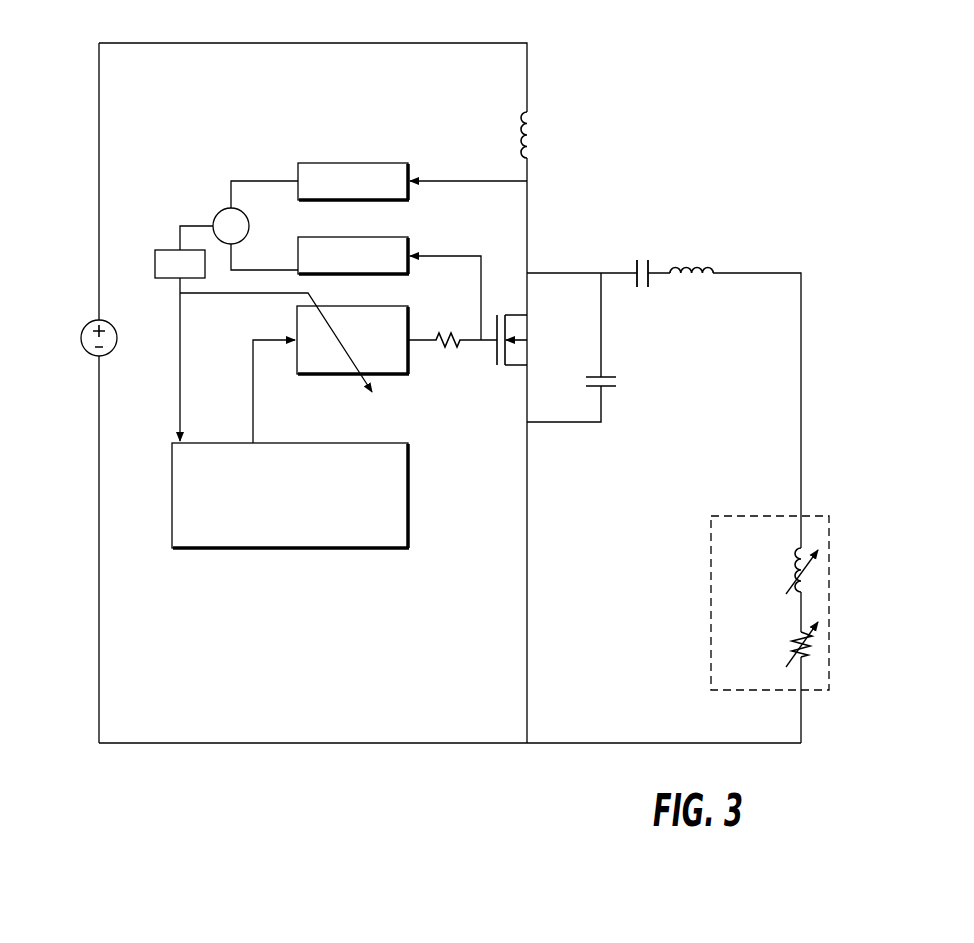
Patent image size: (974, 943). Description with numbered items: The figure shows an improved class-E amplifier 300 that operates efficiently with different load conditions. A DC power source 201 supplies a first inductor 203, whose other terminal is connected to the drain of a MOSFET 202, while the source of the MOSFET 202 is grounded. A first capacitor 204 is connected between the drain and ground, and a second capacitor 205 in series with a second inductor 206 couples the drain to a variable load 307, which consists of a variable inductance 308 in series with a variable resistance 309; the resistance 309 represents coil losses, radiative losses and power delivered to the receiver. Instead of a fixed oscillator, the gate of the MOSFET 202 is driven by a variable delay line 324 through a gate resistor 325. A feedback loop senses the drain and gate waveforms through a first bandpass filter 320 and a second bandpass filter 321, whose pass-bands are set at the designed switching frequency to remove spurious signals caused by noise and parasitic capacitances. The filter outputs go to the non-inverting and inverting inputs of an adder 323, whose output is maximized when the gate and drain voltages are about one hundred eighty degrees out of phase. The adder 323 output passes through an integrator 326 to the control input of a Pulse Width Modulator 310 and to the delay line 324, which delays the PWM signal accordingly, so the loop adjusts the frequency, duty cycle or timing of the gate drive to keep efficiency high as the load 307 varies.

The amplifier 300 is at (803, 134).
The power source 201 is at (84, 329).
The MOSFET 202 is at (533, 352).
The inductor L1 203 is at (533, 98).
The capacitor C1 204 is at (612, 392).
The capacitor C2 205 is at (633, 268).
The inductor L2 206 is at (725, 270).
The variable load 307 is at (815, 515).
The variable inductance L3 308 is at (818, 572).
The variable resistance 309 is at (818, 642).
The Pulse Width Modulator 310 is at (182, 548).
The bandpass filter 320 is at (402, 163).
The bandpass filter 321 is at (401, 237).
The adder 323 is at (210, 205).
The variable delay line 324 is at (312, 375).
The gate resistor 325 is at (446, 358).
The integrator 326 is at (175, 252).